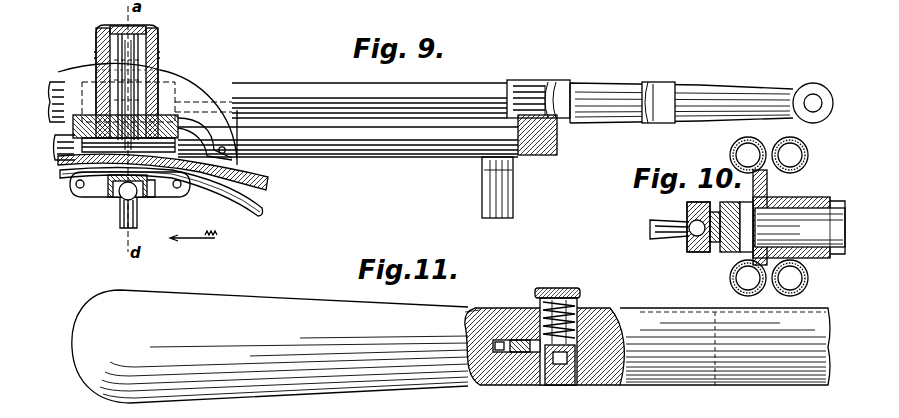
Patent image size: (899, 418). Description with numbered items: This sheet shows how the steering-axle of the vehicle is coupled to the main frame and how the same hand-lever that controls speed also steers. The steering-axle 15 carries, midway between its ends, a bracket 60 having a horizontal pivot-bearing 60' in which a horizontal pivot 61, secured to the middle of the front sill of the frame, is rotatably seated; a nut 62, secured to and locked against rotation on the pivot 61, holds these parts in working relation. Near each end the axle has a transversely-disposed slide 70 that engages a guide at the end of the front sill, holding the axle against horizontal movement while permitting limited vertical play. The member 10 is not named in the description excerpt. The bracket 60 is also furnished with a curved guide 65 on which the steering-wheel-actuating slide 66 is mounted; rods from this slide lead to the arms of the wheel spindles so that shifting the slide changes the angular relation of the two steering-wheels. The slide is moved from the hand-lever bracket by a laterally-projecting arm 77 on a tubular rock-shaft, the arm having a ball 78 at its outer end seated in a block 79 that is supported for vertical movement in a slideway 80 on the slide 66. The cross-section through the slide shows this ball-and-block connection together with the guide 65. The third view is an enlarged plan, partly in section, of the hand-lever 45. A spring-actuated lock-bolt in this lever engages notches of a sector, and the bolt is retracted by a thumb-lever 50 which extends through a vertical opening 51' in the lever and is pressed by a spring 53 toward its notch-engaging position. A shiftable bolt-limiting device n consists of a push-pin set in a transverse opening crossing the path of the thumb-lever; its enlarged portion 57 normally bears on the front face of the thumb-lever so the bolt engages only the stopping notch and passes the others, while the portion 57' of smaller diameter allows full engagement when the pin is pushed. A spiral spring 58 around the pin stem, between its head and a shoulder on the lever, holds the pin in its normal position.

In FIG. 9, the barrel 10 is at (445, 130).
In FIG. 9, the steering-axle 15 is at (655, 84).
In FIG. 11, the hand-lever 45 is at (270, 346).
In FIG. 11, the thumb-lever 50 is at (522, 355).
In FIG. 11, the vertical opening 51' is at (459, 318).
In FIG. 11, the spring 53 is at (500, 340).
In FIG. 11, the enlarged portion of push-pin 57 is at (555, 353).
In FIG. 11, the reduced portion of push-pin 57' is at (725, 346).
In FIG. 11, the spiral spring 58 is at (542, 300).
In FIG. 11, the shiftable bolt-limiting device n is at (563, 275).
In FIG. 9, the bracket 60 is at (147, 109).
In FIG. 9, the horizontal pivot-bearing 60' is at (150, 60).
In FIG. 10, the horizontal pivot-bearing 60' is at (839, 217).
In FIG. 9, the horizontal pivot 61 is at (160, 101).
In FIG. 10, the horizontal pivot 61 is at (800, 200).
In FIG. 9, the nut 62 is at (154, 30).
In FIG. 9, the curved guide 65 is at (226, 190).
In FIG. 10, the curved guide 65 is at (727, 254).
In FIG. 9, the steering-wheel-actuating slide 66 is at (92, 187).
In FIG. 10, the steering-wheel-actuating slide 66 is at (707, 252).
In FIG. 9, the transversely-disposed slide 70 is at (545, 156).
In FIG. 9, the laterally-projecting arm 77 is at (122, 218).
In FIG. 10, the laterally-projecting arm 77 is at (650, 229).
In FIG. 9, the ball 78 is at (138, 200).
In FIG. 10, the ball 78 is at (690, 232).
In FIG. 9, the block 79 is at (107, 198).
In FIG. 10, the block 79 is at (690, 252).
In FIG. 9, the slideway 80 is at (156, 190).